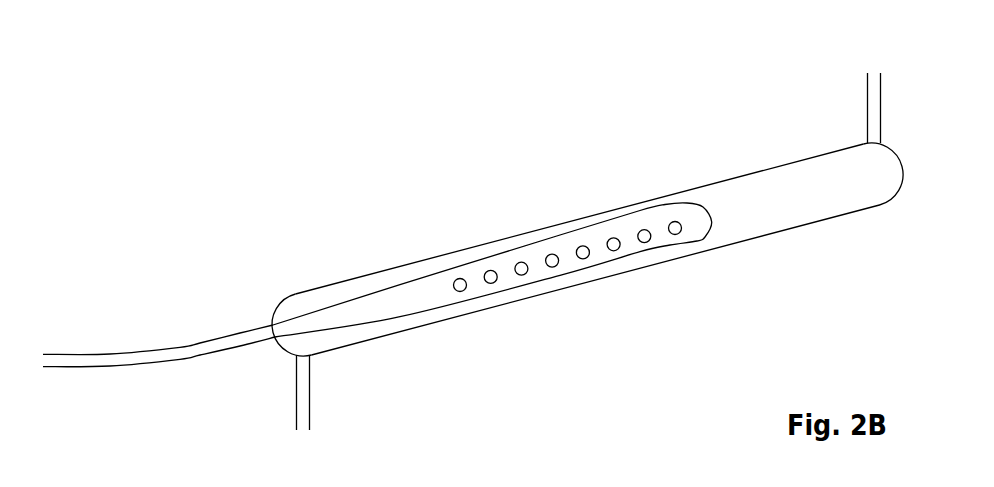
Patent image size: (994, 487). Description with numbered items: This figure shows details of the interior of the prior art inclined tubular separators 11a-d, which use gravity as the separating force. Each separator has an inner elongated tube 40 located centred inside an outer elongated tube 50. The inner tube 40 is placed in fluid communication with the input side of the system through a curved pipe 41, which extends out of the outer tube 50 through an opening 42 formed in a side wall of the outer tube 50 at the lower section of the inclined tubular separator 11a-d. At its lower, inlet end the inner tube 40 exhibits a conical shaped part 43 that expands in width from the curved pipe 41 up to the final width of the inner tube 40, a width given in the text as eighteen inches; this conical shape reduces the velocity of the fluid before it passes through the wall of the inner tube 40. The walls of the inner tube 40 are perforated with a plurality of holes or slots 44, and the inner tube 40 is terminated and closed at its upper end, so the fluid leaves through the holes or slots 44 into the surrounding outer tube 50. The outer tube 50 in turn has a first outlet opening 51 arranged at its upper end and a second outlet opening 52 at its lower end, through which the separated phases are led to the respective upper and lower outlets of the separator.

The inclined tubular separators 11a-d is at (448, 235).
The inner elongated tube 40 is at (533, 242).
The curved pipe 41 is at (162, 351).
The opening 42 is at (271, 324).
The conical shaped part 43 is at (352, 340).
The holes or slots 44 is at (461, 292).
The outer elongated tube 50 is at (645, 199).
The first outlet opening 51 is at (867, 105).
The second outlet opening 52 is at (294, 382).